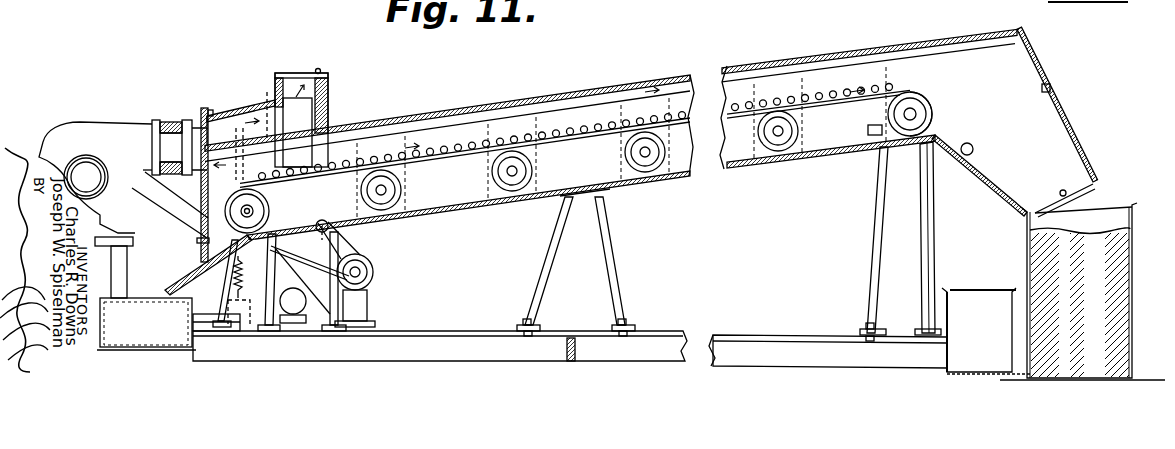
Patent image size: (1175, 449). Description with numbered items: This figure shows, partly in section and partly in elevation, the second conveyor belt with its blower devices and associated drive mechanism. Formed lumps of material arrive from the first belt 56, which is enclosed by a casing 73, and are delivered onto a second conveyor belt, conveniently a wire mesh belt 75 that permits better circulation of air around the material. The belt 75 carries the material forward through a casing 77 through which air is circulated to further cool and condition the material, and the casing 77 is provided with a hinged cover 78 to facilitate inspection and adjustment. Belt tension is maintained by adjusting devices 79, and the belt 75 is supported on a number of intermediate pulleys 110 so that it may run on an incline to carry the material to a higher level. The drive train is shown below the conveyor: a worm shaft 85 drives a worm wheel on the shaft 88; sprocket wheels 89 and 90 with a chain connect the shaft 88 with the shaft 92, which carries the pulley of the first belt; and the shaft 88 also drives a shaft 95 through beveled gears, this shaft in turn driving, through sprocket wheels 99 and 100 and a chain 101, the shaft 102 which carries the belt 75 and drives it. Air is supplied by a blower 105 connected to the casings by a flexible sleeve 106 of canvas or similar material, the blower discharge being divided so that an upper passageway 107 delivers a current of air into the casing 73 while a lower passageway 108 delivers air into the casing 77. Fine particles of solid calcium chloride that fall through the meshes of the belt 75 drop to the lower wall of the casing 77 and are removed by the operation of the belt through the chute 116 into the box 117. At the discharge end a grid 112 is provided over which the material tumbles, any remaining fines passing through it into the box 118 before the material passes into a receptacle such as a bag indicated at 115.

The belt 56 is at (300, 117).
The casing 73 is at (319, 74).
The wire mesh belt 75 is at (677, 107).
The casing 77 is at (488, 207).
The hinged cover 78 is at (818, 58).
The adjusting devices 79 is at (873, 117).
The worm shaft 85 is at (300, 315).
The shaft 88 is at (238, 310).
The sprocket wheel 89 is at (233, 310).
The sprocket wheel 90 is at (240, 128).
The shaft 92 is at (267, 92).
The shaft 95 is at (387, 287).
The sprocket wheel 99 is at (370, 250).
The sprocket wheel 100 is at (271, 212).
The chain 101 is at (367, 227).
The shaft 102 is at (192, 226).
The blower 105 is at (70, 128).
The flexible sleeve 106 is at (171, 122).
The upper passageway 107 is at (220, 130).
The lower passageway 108 is at (205, 172).
The intermediate pulleys 110 is at (420, 150).
The grid 112 is at (987, 170).
The receptacle 115 is at (1093, 294).
The chute 116 is at (187, 300).
The box 117 is at (146, 313).
The box 118 is at (978, 300).